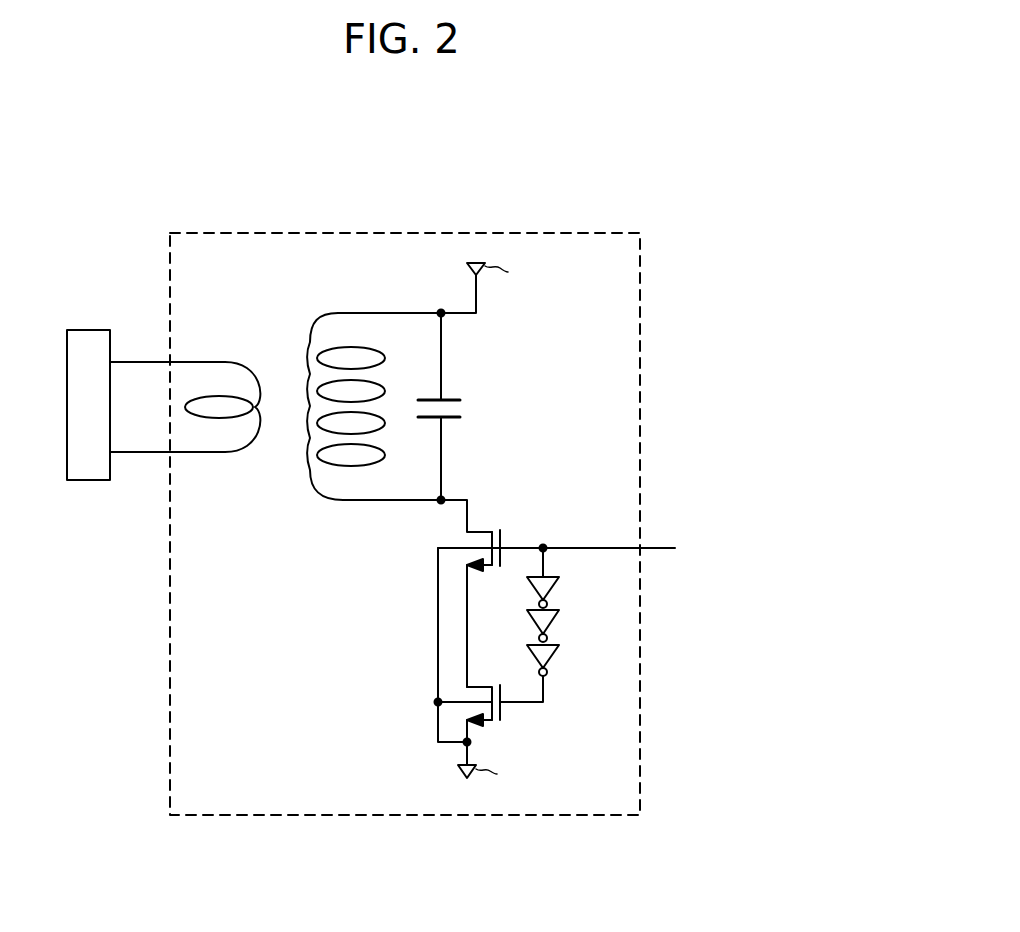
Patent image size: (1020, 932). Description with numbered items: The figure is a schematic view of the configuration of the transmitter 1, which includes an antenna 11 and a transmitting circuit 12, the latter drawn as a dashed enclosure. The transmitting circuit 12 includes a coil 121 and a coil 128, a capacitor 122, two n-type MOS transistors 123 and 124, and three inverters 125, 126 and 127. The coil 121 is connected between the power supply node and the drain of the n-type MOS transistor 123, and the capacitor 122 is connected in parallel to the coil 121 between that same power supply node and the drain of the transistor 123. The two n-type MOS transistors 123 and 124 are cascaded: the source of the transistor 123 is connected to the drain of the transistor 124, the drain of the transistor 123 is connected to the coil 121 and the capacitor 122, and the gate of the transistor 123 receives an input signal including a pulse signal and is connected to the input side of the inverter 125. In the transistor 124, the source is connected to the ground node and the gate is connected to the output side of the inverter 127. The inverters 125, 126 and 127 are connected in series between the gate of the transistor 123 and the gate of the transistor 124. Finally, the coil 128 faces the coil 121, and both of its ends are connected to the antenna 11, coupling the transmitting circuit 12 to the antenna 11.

The transmitter 1 is at (418, 143).
The antenna 11 is at (97, 330).
The transmitting circuit 12 is at (548, 233).
The coil 121 is at (313, 340).
The capacitor 122 is at (455, 400).
The n-type MOS transistor 123 is at (478, 534).
The n-type MOS transistor 124 is at (503, 674).
The inverter 125 is at (556, 584).
The inverter 126 is at (556, 618).
The inverter 127 is at (556, 653).
The coil 128 is at (212, 362).